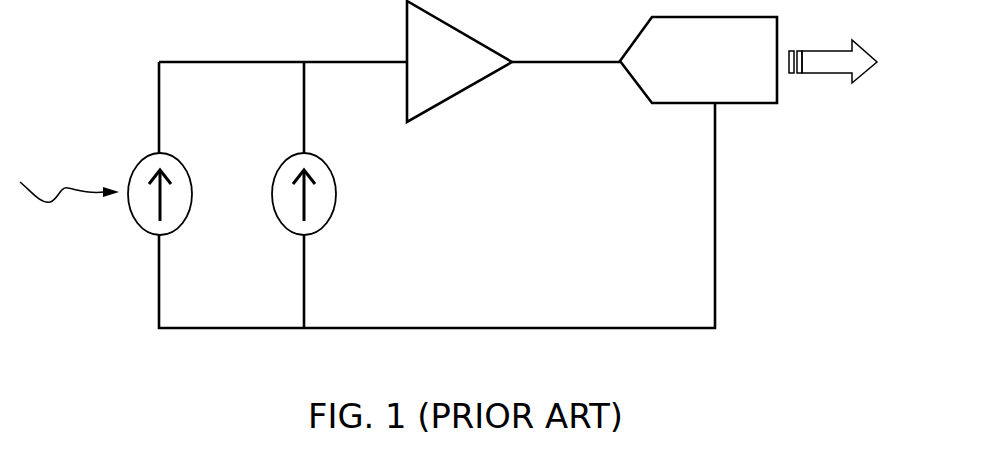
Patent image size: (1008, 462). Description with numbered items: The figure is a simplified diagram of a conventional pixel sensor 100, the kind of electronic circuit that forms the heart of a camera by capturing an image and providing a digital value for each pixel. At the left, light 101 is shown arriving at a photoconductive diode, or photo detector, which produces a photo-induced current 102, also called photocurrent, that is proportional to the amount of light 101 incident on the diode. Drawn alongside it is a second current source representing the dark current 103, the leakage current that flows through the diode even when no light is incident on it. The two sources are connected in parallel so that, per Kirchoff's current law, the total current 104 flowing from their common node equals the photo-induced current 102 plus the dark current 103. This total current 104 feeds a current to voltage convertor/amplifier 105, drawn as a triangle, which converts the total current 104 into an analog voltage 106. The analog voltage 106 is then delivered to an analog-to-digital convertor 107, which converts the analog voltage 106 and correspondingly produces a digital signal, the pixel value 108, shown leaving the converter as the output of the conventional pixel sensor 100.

The conventional pixel sensor 100 is at (864, 351).
The light 101 is at (69, 221).
The photo-induced current 102 is at (158, 123).
The dark current 103 is at (303, 128).
The total current 104 is at (330, 60).
The current to voltage convertor/amplifier 105 is at (459, 61).
The analog voltage 106 is at (552, 60).
The analog-to-digital convertor 107 is at (698, 60).
The pixel value 108 is at (833, 55).